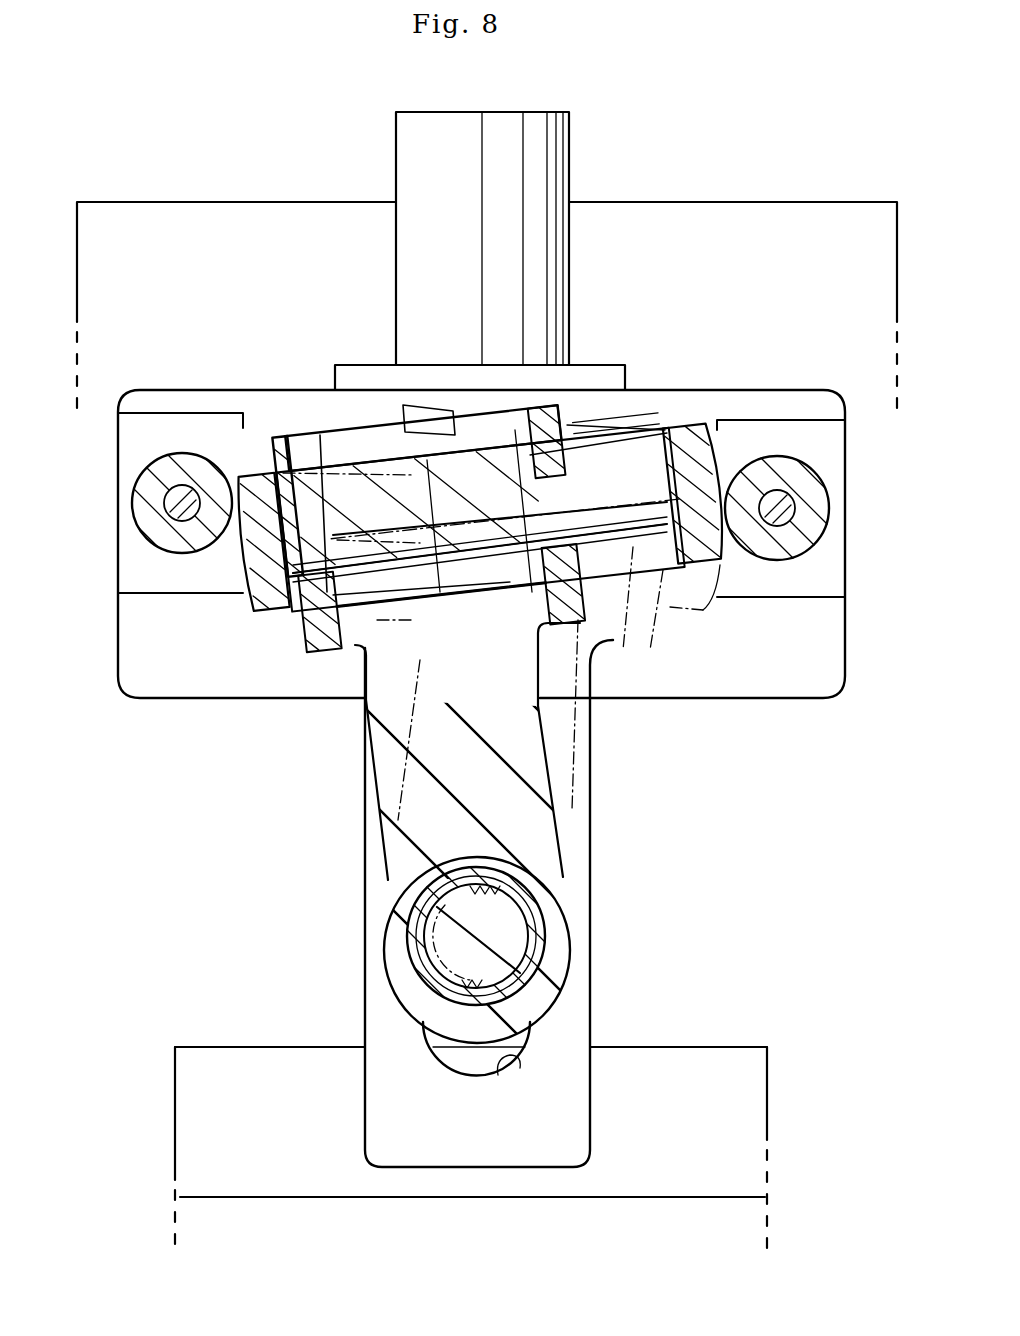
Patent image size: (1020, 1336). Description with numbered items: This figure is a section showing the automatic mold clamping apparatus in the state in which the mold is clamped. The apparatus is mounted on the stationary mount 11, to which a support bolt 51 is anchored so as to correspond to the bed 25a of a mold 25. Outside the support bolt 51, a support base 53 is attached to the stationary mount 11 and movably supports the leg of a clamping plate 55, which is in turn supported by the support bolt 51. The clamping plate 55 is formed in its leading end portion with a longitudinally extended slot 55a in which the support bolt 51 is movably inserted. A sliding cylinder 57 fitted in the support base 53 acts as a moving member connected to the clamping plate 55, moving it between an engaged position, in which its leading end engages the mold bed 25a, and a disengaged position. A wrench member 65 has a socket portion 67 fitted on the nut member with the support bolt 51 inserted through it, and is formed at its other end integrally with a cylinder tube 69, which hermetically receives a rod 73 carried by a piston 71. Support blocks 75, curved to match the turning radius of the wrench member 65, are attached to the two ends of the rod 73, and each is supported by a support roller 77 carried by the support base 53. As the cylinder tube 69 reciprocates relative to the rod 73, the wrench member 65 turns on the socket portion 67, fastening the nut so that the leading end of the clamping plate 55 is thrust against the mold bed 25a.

The stationary mount 11 is at (167, 237).
The sliding cylinder 57 is at (537, 195).
The support base 53 is at (266, 670).
The support roller 77 is at (162, 470).
The support block 75 is at (253, 510).
The cylinder tube 69 is at (330, 450).
The rod 73 is at (594, 490).
The piston 71 is at (350, 577).
The wrench member 65 is at (552, 772).
The socket portion 67 is at (537, 922).
The support bolt 51 is at (495, 942).
The clamping plate 55 is at (590, 1022).
The slot 55a is at (522, 1057).
The mold 25 is at (175, 1145).
The mold bed 25a is at (243, 1093).